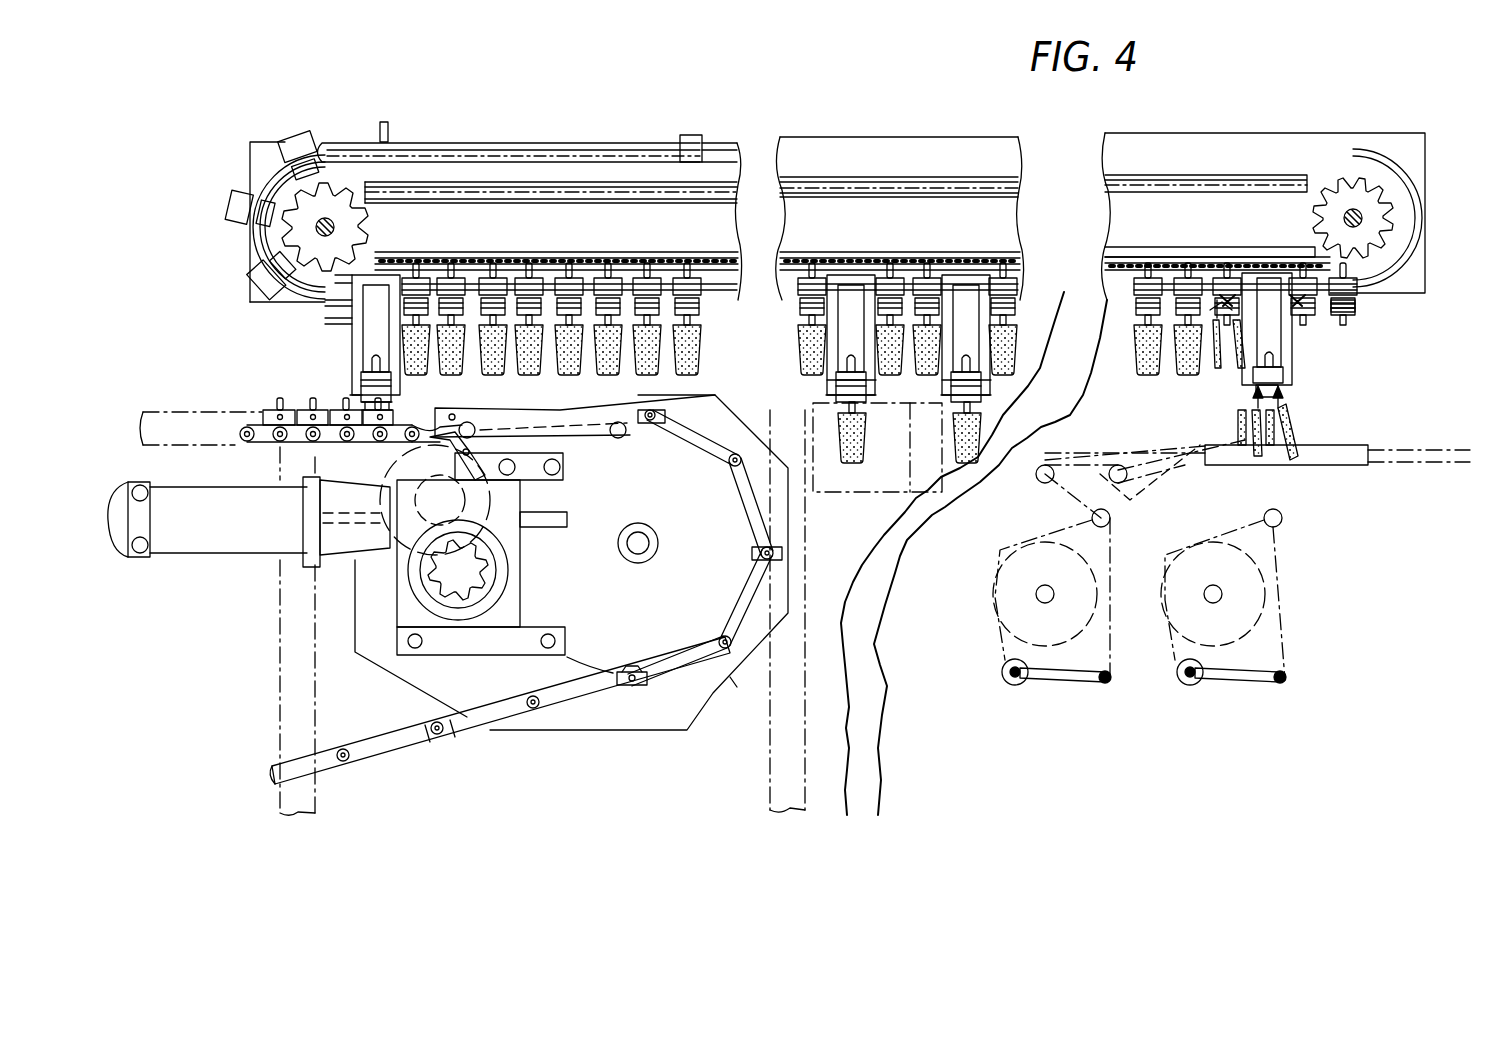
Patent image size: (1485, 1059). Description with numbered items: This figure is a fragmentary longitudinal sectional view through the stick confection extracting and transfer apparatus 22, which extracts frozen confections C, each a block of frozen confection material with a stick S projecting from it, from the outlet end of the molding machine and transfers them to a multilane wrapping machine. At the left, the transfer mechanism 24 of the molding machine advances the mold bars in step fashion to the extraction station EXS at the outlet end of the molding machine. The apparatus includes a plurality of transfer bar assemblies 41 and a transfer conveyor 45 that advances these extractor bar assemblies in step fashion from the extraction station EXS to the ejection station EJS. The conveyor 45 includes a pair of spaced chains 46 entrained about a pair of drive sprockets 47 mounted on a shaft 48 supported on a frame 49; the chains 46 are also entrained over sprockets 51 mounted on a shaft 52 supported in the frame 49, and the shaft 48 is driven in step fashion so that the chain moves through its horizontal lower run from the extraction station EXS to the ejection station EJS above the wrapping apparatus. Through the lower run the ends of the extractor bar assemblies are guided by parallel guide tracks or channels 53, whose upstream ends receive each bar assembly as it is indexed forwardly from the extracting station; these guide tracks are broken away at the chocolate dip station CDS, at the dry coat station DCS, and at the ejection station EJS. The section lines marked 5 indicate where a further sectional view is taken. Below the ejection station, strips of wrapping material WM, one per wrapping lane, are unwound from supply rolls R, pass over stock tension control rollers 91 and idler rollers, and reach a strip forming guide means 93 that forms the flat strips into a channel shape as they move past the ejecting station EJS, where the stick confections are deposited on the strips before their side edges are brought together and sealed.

The stick confection extracting and transfer apparatus 22 is at (925, 137).
The transfer mechanism 24 is at (180, 400).
The transfer bar assemblies 41 is at (470, 262).
The transfer conveyor 45 is at (1242, 165).
The chains 46 is at (628, 262).
The drive sprockets 47 is at (1352, 185).
The shaft 48 is at (1338, 218).
The frame 49 is at (1158, 160).
The sprockets 51 is at (330, 200).
The shaft 52 is at (345, 226).
The guide tracks 53 is at (787, 278).
The section line 5 is at (1056, 278).
The stock tension control rollers 91 is at (1108, 680).
The strip forming guide means 93 is at (1357, 445).
The extraction station EXS is at (355, 347).
The chocolate dip station CDS is at (842, 368).
The dry coat station DCS is at (980, 362).
The ejection station EJS is at (1288, 343).
The stick S is at (697, 321).
The frozen confections C is at (692, 352).
The supply rolls R is at (995, 597).
The wrapping material WM is at (1118, 552).